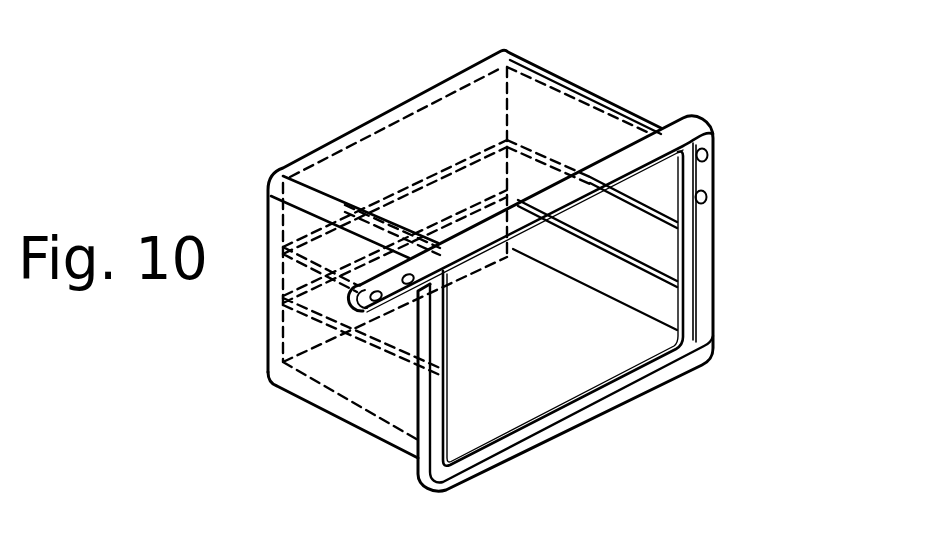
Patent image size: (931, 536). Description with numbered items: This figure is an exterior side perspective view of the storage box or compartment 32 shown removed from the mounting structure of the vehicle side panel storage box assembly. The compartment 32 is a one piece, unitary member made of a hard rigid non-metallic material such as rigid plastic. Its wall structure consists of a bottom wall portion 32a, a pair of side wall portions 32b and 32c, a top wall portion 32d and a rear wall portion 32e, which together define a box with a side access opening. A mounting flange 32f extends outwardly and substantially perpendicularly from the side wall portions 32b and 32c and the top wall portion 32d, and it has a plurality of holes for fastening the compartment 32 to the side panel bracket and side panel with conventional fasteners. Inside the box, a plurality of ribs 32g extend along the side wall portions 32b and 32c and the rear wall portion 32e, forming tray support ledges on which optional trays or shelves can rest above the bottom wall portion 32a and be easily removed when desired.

The storage box or compartment 32 is at (333, 114).
The bottom wall portion 32a is at (547, 373).
The side wall portion 32b is at (345, 365).
The side wall portion 32c is at (661, 179).
The top wall portion 32d is at (537, 95).
The rear wall portion 32e is at (343, 190).
The mounting flange 32f is at (702, 130).
The ribs 32g is at (675, 224).